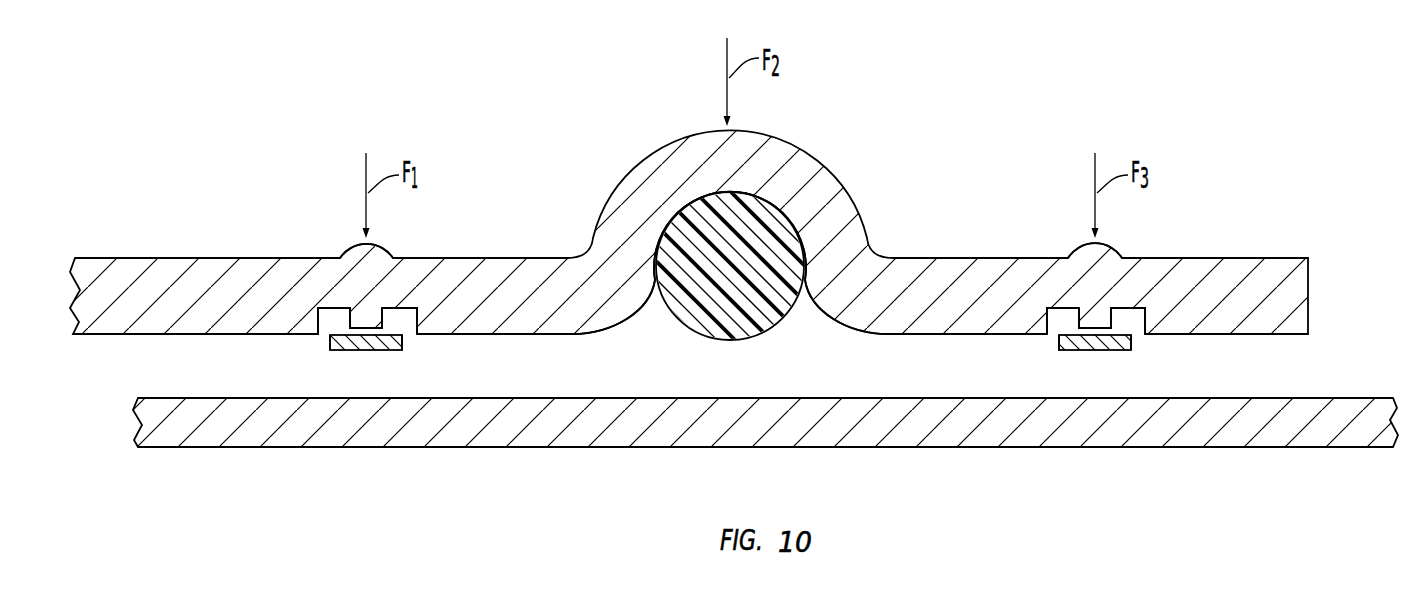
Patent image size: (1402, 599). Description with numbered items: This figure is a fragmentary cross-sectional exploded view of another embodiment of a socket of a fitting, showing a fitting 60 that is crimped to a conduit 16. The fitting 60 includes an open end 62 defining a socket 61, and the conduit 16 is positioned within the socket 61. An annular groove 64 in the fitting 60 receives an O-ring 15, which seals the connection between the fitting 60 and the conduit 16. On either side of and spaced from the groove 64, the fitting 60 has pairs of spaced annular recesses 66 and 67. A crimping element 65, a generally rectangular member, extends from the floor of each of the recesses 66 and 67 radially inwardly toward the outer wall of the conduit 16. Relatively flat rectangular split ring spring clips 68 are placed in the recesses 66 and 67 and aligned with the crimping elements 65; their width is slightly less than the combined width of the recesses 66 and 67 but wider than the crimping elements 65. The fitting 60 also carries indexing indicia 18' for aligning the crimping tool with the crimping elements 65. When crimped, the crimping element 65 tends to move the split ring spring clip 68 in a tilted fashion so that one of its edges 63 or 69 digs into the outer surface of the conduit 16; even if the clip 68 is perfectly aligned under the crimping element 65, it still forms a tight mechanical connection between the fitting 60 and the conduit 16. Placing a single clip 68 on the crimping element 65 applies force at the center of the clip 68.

The O-ring 15 is at (748, 231).
The conduit 16 is at (873, 449).
The indexing indicia 18' is at (747, 227).
The fitting 60 is at (708, 239).
The socket 61 is at (1314, 363).
The open end 62 is at (1290, 352).
The edge 63 is at (331, 351).
The annular groove 64 is at (812, 283).
The crimping element 65 is at (364, 322).
The annular recess 66 is at (326, 322).
The annular recess 67 is at (403, 322).
The split ring spring clip 68 is at (366, 352).
The edge 69 is at (399, 351).